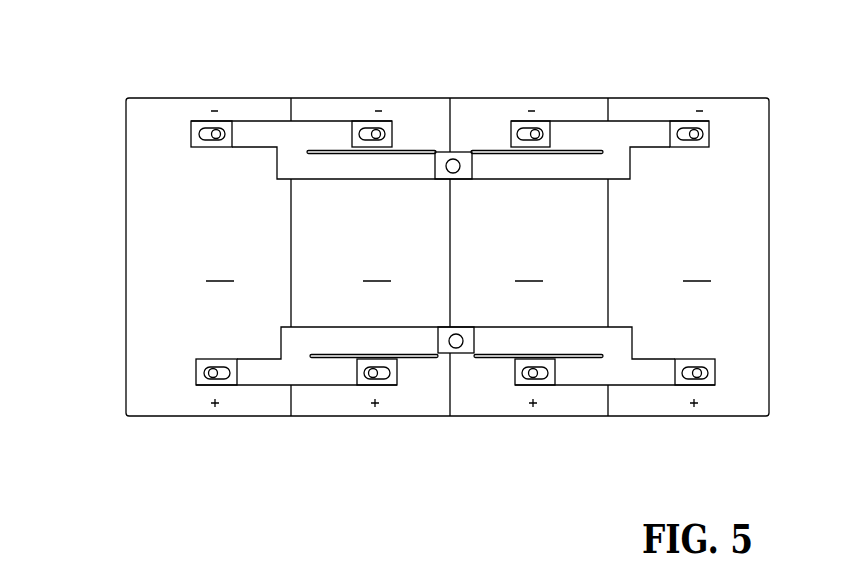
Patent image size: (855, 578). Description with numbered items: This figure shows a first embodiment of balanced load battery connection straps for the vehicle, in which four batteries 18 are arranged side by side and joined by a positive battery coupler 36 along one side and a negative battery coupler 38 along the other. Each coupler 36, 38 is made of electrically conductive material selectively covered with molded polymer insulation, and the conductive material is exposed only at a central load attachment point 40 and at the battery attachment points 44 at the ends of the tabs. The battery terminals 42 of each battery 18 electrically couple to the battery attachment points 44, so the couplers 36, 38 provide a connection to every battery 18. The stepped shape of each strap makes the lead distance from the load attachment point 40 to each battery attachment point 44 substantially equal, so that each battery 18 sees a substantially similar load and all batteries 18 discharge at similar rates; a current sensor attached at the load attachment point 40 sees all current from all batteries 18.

The battery 18 is at (458, 257).
The positive battery coupler 36 is at (305, 401).
The negative battery coupler 38 is at (253, 185).
The load attachment point 40 is at (452, 162).
The battery terminal 42 is at (416, 260).
The battery attachment point 44 is at (468, 255).